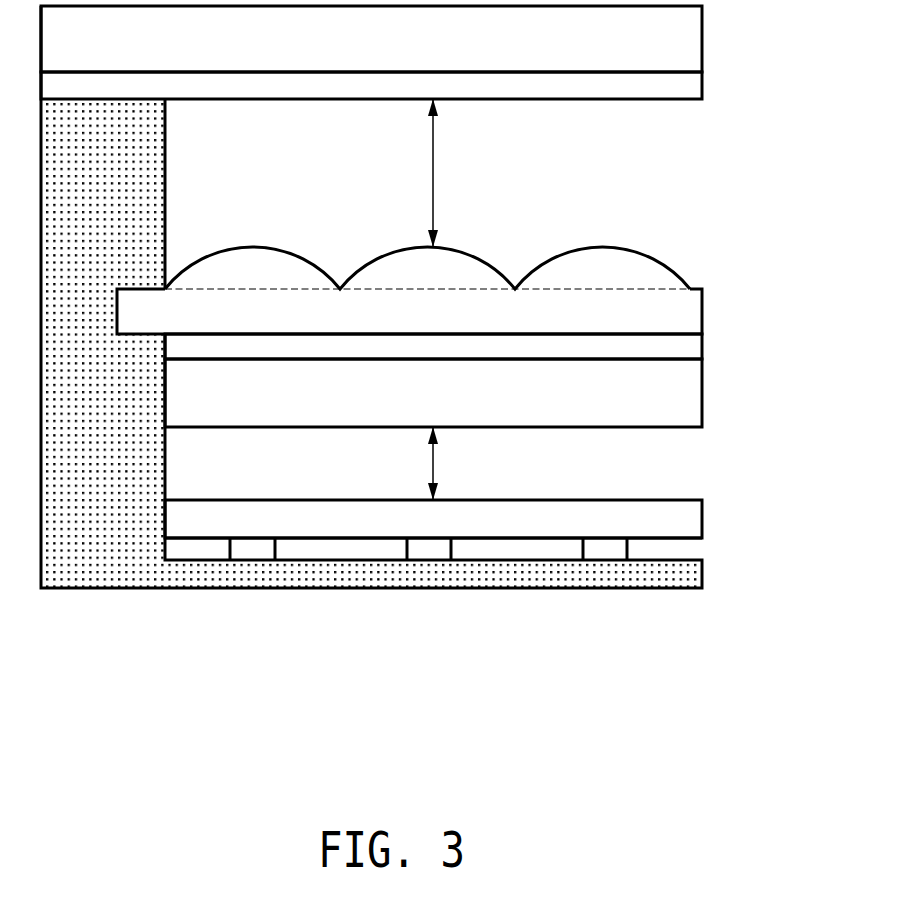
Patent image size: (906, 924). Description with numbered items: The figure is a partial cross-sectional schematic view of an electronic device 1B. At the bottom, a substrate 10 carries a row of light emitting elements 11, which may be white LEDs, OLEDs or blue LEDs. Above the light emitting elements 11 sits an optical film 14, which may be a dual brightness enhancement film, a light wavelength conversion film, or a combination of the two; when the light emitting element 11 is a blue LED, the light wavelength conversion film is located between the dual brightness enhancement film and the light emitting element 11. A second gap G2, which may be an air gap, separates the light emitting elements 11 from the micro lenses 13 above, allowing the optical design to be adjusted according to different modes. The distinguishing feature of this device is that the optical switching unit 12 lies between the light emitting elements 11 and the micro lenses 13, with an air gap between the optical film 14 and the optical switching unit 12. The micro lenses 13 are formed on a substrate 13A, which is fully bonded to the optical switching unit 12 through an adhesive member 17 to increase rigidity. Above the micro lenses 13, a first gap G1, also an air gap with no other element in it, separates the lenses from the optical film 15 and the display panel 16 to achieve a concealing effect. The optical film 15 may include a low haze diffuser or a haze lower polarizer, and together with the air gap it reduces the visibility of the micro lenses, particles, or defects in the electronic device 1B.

The substrate 10 is at (668, 577).
The light emitting elements 11 is at (605, 553).
The optical switching unit 12 is at (668, 393).
The micro lenses 13 is at (655, 273).
The substrate 13A is at (668, 313).
The optical film 14 is at (668, 513).
The optical film 15 is at (668, 87).
The display panel 16 is at (668, 40).
The adhesive member 17 is at (668, 349).
The first gap G1 is at (454, 173).
The second gap G2 is at (454, 463).
The electronic device 1B is at (771, 725).